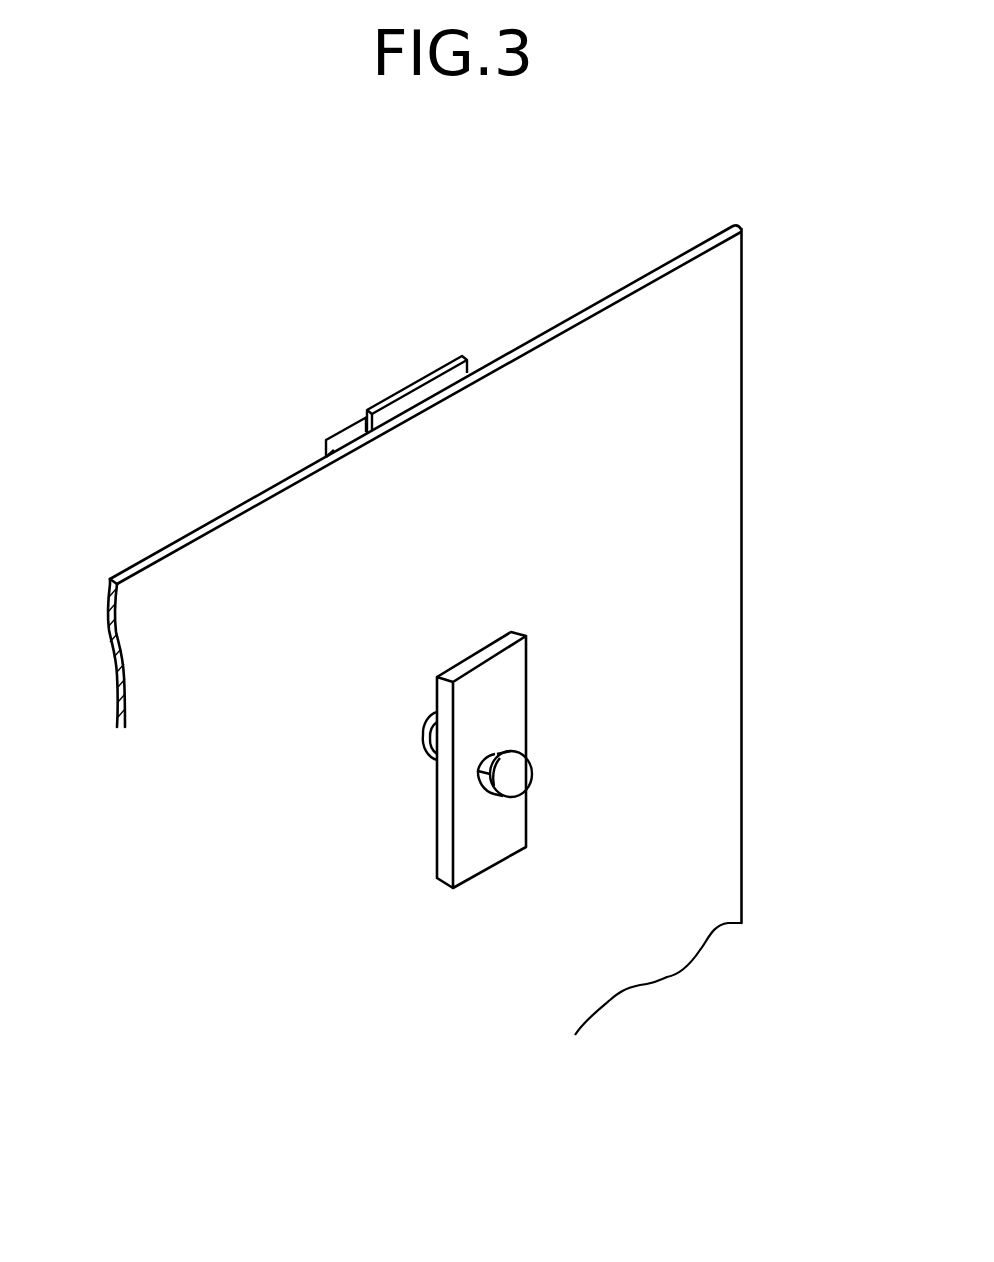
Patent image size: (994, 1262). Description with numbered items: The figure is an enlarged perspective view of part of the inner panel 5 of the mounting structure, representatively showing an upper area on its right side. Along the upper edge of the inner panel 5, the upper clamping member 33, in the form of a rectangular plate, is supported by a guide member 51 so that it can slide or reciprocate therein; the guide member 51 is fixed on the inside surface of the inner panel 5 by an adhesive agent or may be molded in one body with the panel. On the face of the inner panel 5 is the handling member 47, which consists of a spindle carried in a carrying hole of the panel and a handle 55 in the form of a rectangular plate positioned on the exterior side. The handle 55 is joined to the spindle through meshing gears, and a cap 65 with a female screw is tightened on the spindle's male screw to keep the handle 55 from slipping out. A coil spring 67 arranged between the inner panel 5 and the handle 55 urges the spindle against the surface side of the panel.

The inner panel 5 is at (758, 317).
The upper clamping member 33 is at (438, 368).
The guide member 51 is at (348, 431).
The handle 55 is at (512, 677).
The handling member 47 is at (533, 752).
The cap 65 is at (512, 773).
The coil spring 67 is at (426, 738).